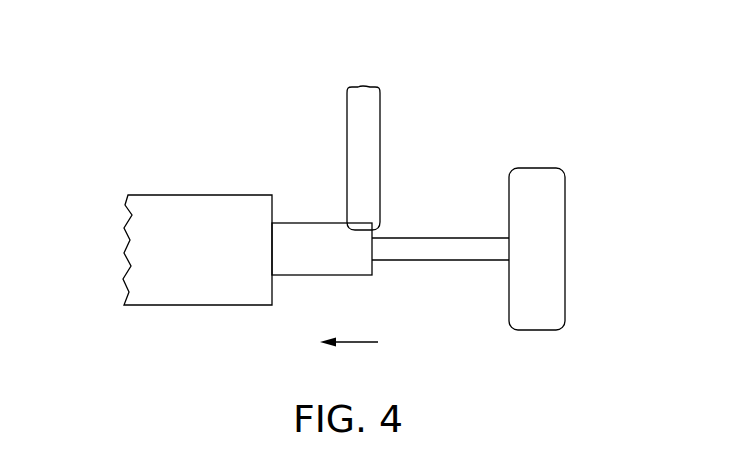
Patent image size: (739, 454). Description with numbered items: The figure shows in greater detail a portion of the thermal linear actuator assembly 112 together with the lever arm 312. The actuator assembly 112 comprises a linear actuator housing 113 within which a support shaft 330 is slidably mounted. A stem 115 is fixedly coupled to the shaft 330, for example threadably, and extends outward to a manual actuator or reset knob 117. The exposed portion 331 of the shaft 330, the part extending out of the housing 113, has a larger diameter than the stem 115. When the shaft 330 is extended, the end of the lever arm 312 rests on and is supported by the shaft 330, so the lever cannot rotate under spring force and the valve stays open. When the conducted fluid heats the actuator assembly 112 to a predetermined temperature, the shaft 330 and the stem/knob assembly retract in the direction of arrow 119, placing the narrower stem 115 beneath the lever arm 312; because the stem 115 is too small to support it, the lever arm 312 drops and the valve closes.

The thermal linear actuator assembly 112 is at (154, 97).
The linear actuator housing 113 is at (207, 266).
The stem 115 is at (458, 255).
The manual actuator 117 is at (533, 168).
The arrow 119 is at (357, 342).
The lever arm 312 is at (373, 140).
The shaft 330 is at (305, 208).
The exposed portion 331 is at (338, 268).